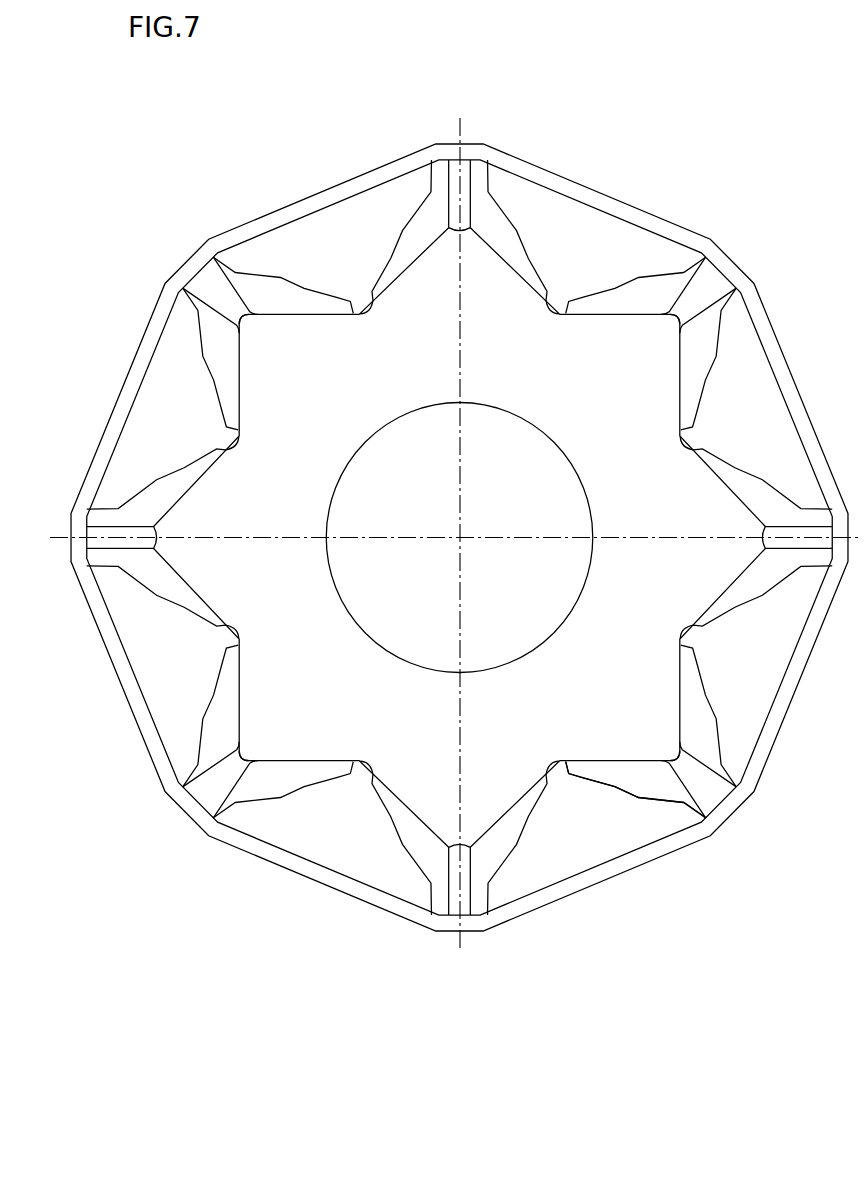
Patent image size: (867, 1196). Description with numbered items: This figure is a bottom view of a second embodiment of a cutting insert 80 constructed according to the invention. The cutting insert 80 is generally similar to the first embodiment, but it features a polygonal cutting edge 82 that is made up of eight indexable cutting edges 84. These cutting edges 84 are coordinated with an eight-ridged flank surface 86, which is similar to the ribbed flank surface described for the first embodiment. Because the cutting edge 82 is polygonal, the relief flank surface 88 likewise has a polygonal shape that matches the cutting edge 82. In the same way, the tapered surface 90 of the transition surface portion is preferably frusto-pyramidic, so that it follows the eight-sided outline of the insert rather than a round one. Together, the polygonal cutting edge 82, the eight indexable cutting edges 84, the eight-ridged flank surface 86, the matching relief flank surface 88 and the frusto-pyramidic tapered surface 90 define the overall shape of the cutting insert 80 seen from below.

The cutting insert 80 is at (714, 172).
The polygonal cutting edge 82 is at (467, 142).
The indexable cutting edges 84 is at (291, 205).
The 8-ridged flank surface 86 is at (623, 762).
The relief flank surface 88 is at (700, 837).
The tapered surface 90 is at (545, 858).